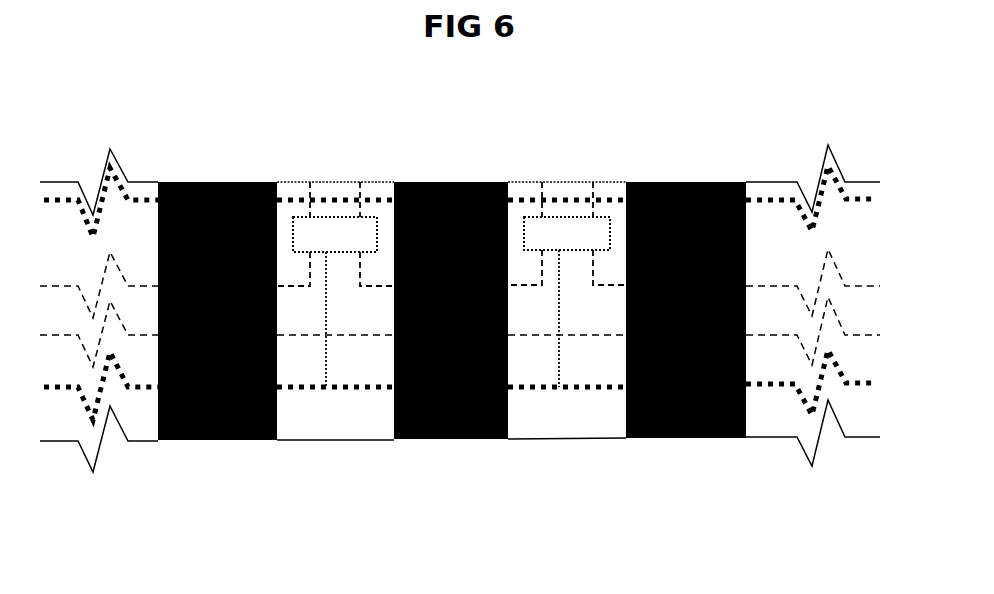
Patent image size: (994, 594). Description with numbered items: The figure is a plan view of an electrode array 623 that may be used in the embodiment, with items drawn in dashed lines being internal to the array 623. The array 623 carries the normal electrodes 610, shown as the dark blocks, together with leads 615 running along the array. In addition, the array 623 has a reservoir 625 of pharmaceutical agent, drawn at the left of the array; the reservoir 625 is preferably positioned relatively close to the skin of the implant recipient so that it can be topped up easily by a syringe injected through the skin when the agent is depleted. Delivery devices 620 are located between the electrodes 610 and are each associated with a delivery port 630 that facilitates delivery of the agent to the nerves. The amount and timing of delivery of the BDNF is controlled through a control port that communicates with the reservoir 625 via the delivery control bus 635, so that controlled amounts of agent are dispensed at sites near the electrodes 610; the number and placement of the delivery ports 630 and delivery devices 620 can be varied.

The electrodes 610 is at (678, 438).
The leads 615 is at (775, 196).
The delivery devices 620 is at (577, 232).
The electrode array 623 is at (177, 147).
The reservoir 625 is at (146, 320).
The delivery port 630 is at (347, 181).
The delivery control bus 635 is at (765, 383).